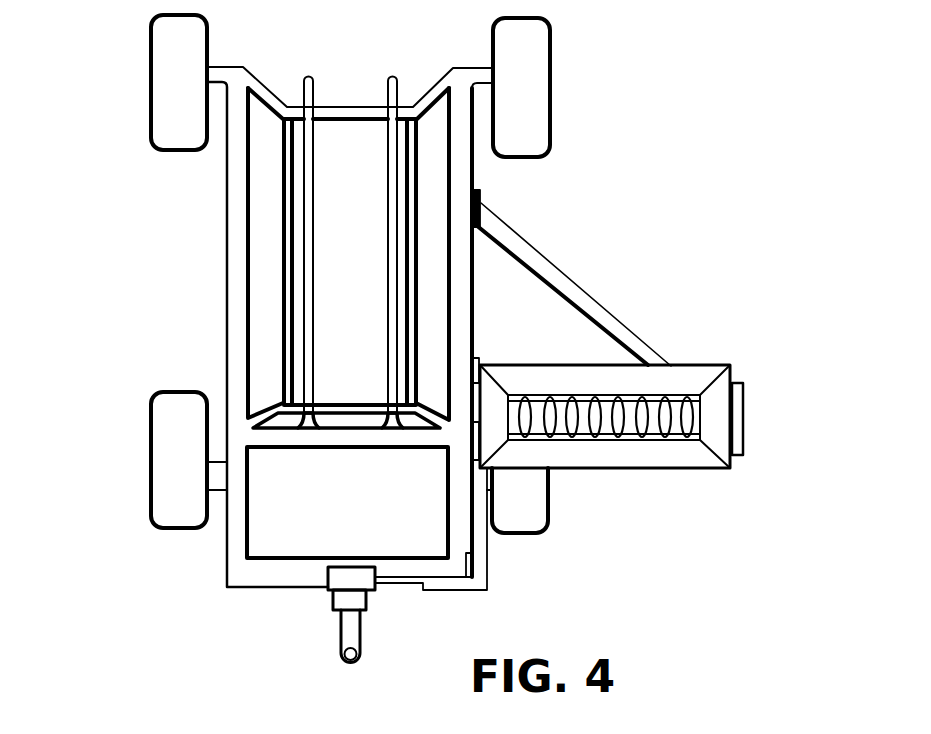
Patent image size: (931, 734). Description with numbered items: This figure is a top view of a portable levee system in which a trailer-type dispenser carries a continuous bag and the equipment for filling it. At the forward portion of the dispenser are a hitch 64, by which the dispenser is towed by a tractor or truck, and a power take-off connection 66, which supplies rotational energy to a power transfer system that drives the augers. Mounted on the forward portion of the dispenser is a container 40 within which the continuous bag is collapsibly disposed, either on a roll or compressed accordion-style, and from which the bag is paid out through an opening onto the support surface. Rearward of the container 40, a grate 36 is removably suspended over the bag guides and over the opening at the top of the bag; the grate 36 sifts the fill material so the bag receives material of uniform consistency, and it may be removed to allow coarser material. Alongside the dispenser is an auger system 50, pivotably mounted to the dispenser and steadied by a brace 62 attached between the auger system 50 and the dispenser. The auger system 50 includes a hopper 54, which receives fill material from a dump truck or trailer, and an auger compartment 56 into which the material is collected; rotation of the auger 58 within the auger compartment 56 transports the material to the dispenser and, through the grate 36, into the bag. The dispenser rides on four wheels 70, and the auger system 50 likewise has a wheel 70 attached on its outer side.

The grate 36 is at (323, 338).
The container 40 is at (283, 543).
The auger system 50 is at (653, 358).
The hopper 54 is at (643, 458).
The auger compartment 56 is at (675, 400).
The auger 58 is at (692, 438).
The brace 62 is at (537, 257).
The hitch 64 is at (362, 632).
The power take-off connection 66 is at (368, 598).
The wheels 70 is at (738, 418).